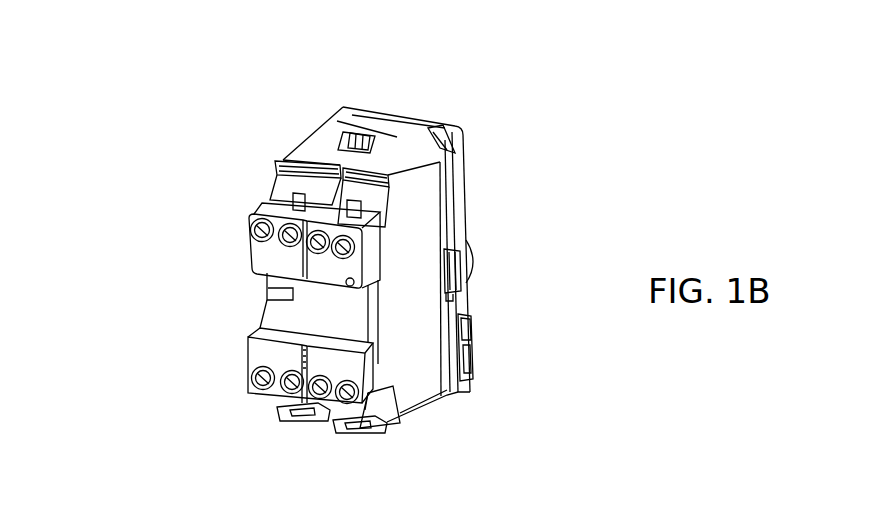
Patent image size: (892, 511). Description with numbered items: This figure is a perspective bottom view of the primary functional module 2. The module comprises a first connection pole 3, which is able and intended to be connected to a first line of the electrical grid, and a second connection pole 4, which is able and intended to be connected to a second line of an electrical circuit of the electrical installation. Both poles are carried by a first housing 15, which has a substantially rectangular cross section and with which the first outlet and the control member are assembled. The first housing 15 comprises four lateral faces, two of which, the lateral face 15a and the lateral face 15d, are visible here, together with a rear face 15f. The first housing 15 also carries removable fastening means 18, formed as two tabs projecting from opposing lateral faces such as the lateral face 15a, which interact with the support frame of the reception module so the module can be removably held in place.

The primary functional module 2 is at (272, 163).
The first connection pole 3 is at (262, 230).
The second connection pole 4 is at (260, 379).
The first housing 15 is at (428, 168).
The lateral face 15a is at (400, 150).
The lateral face 15d is at (413, 267).
The rear face 15f is at (342, 315).
The removable fastening means 18 is at (367, 138).